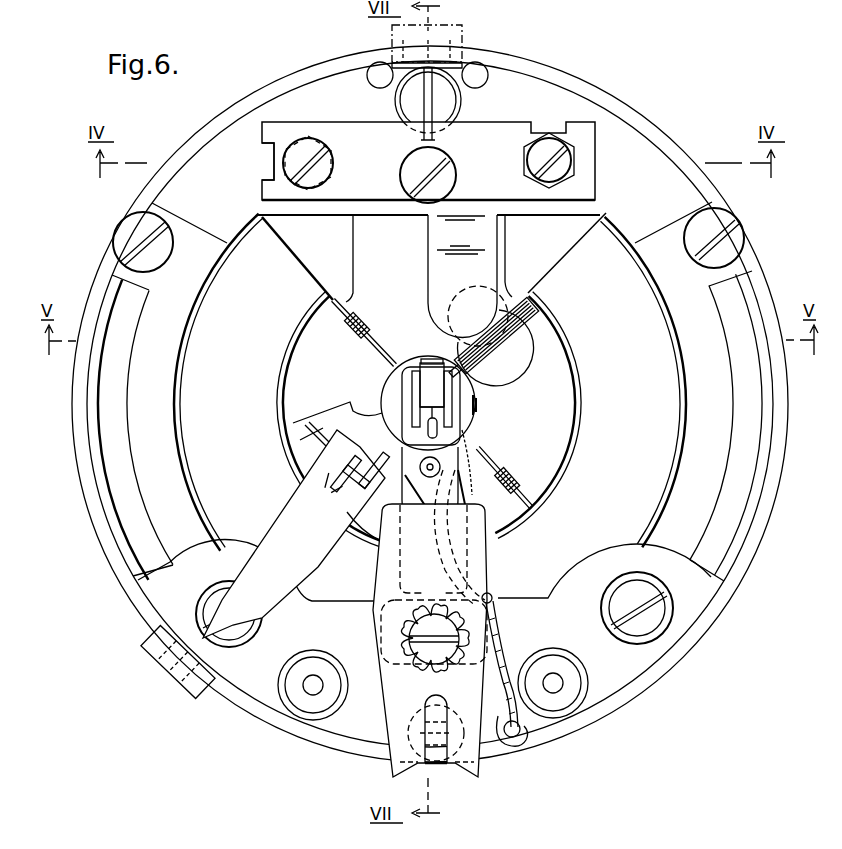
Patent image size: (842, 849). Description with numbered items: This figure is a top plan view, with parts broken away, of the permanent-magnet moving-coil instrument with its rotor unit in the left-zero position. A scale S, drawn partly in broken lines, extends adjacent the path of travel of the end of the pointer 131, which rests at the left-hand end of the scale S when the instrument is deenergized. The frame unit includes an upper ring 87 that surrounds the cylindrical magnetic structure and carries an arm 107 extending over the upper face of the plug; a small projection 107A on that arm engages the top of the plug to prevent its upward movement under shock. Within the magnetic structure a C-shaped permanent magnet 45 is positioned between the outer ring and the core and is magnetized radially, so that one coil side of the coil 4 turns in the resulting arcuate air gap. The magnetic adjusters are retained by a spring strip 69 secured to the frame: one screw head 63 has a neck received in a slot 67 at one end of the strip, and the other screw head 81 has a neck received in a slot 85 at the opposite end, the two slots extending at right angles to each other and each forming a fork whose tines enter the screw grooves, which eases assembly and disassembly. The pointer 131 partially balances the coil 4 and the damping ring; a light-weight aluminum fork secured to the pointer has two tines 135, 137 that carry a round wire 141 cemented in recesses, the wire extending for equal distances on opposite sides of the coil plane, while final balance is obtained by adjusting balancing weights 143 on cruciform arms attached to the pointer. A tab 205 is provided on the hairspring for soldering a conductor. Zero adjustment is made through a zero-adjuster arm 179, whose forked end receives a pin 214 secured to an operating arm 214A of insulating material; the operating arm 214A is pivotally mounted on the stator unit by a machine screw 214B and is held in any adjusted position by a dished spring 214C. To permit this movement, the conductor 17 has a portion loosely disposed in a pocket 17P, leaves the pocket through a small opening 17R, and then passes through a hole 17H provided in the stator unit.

The coil 4 is at (524, 297).
The conductor 17 is at (498, 748).
The hole 17H is at (536, 735).
The pocket 17P is at (486, 549).
The small opening 17R is at (489, 594).
The C-shaped permanent magnet 45 is at (296, 262).
The head 63 is at (320, 145).
The slot 67 is at (273, 148).
The spring strip 69 is at (385, 120).
The head 81 is at (572, 160).
The slot 85 is at (556, 134).
The ring 87 is at (740, 577).
The arm 107 is at (426, 255).
The small projection 107A is at (440, 330).
The pointer 131 is at (279, 540).
The tine 135 is at (341, 408).
The tine 137 is at (362, 544).
The round wire 141 is at (297, 466).
The balancing weights 143 is at (365, 335).
The zero-adjuster arm 179 is at (392, 454).
The tab 205 is at (480, 406).
The pin 214 is at (466, 480).
The operating arm 214A is at (391, 586).
The machine screw 214B is at (420, 668).
The dished spring 214C is at (436, 668).
The scale S is at (463, 28).